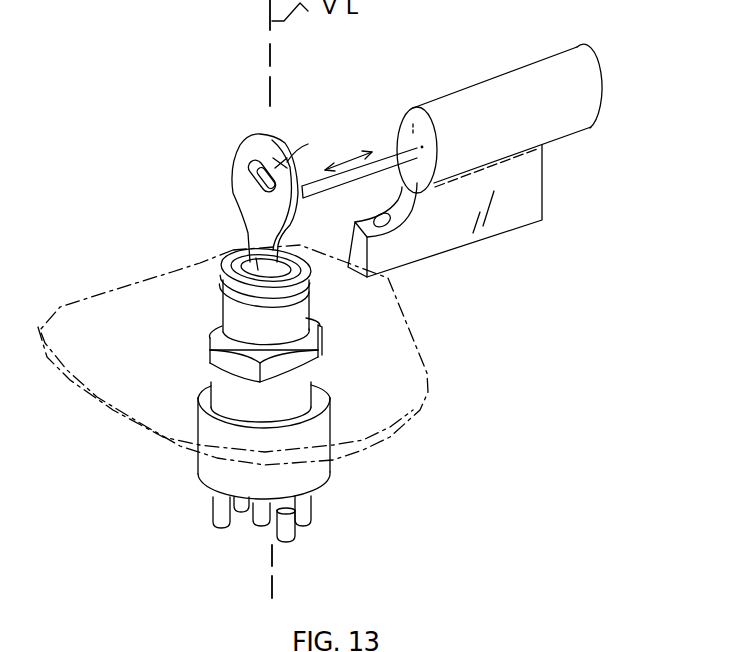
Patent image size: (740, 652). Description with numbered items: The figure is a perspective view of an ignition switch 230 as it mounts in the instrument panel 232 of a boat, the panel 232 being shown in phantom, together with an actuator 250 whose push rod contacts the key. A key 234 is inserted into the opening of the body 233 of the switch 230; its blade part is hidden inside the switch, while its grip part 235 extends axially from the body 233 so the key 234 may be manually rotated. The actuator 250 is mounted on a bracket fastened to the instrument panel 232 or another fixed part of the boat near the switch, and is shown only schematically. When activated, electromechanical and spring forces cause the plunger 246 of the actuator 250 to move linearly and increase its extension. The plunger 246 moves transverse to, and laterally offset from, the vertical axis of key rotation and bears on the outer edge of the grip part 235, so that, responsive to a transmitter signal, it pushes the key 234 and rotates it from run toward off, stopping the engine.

The ignition switch 230 is at (198, 470).
The instrument panel 232 is at (367, 362).
The body 233 is at (237, 322).
The key 234 is at (232, 190).
The grip part 235 is at (252, 153).
The plunger 246 is at (385, 150).
The actuator 250 is at (565, 130).